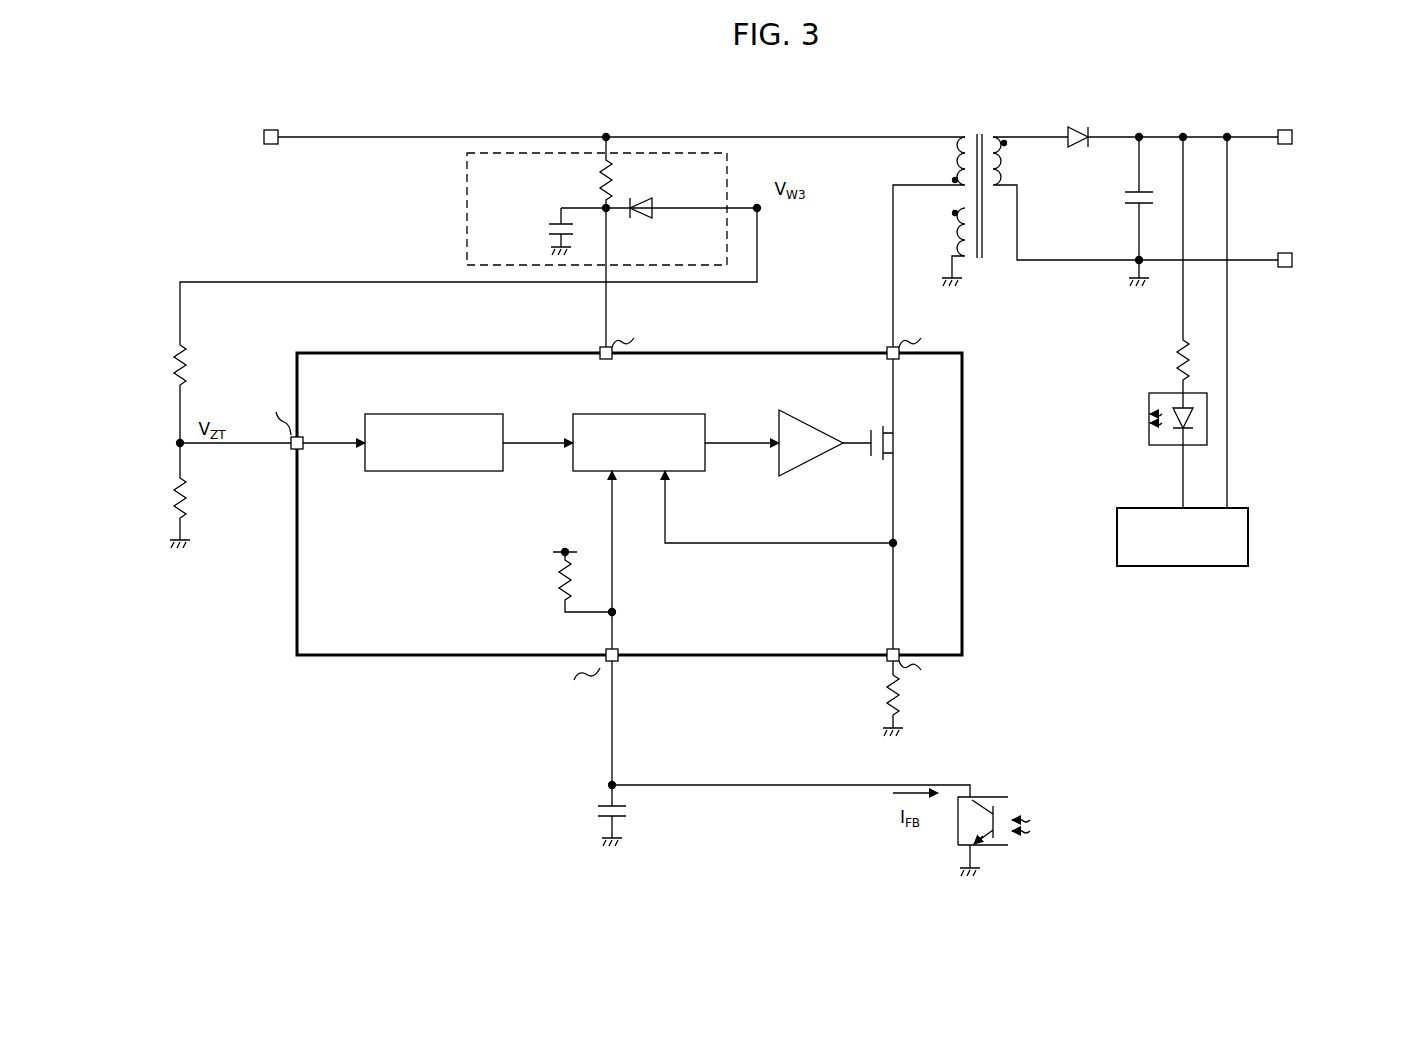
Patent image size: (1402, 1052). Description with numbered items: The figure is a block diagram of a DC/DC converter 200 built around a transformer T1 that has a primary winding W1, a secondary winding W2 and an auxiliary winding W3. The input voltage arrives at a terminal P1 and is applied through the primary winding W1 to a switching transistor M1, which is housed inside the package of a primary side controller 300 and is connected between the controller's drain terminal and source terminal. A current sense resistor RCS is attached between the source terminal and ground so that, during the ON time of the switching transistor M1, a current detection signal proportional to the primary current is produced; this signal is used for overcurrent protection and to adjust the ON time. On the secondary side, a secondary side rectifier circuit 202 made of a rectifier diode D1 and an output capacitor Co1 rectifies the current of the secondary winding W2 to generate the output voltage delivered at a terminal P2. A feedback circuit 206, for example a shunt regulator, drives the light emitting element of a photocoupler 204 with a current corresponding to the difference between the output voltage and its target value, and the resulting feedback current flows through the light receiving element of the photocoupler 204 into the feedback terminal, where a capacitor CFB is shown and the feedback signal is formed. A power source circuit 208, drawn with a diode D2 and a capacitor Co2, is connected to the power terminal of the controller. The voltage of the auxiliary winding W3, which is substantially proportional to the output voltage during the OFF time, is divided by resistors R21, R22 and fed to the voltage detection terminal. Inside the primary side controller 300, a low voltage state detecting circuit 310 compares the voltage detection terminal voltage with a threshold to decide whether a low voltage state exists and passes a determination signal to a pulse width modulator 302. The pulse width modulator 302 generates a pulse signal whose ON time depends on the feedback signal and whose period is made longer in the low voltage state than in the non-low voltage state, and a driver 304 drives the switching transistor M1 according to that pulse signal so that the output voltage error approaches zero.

The DC/DC converter 200 is at (1388, 82).
The secondary side rectifier circuit 202 is at (1045, 290).
The photocoupler 204 is at (1156, 445).
The feedback circuit 206 is at (1187, 567).
The power source circuit 208 is at (467, 215).
The primary side controller 300 is at (377, 657).
The pulse width modulator 302 is at (650, 412).
The driver 304 is at (805, 416).
The low voltage state detecting circuit 310 is at (430, 412).
The input terminal P1 is at (270, 130).
The output terminal P2 is at (1285, 145).
The transformer T1 is at (930, 100).
The primary winding W1 is at (969, 136).
The secondary winding W2 is at (993, 136).
The auxiliary winding W3 is at (950, 231).
The rectifier diode D1 is at (1075, 118).
The auxiliary diode D2 is at (649, 188).
The output capacitor Co1 is at (1118, 200).
The auxiliary capacitor Co2 is at (538, 228).
The switching transistor M1 is at (900, 441).
The resistor R21 is at (196, 362).
The resistor R22 is at (196, 497).
The current sense resistor RCS is at (884, 692).
The feedback capacitor CFB is at (634, 814).